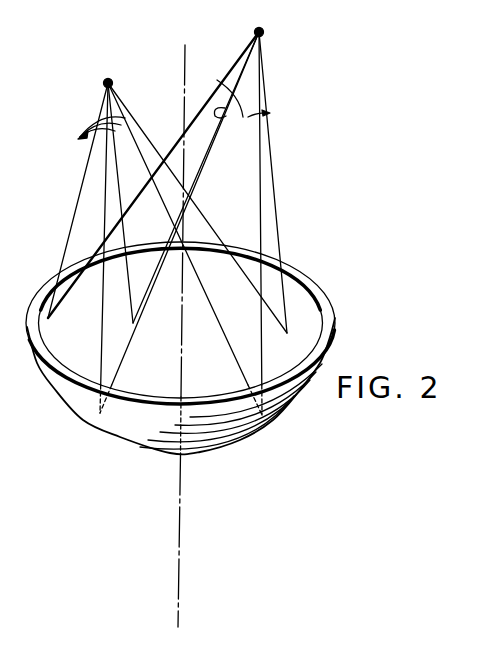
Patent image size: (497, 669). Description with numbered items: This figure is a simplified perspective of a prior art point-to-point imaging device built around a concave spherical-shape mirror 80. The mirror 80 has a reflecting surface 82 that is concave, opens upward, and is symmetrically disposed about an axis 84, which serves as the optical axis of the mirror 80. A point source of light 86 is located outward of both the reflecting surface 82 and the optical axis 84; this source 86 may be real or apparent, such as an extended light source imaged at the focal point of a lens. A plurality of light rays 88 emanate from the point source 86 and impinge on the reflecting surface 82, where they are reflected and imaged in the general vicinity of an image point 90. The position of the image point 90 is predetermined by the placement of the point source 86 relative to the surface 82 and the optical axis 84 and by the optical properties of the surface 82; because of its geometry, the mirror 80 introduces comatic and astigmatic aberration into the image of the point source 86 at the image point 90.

The concave spherical-shape mirror 80 is at (281, 419).
The reflecting surface 82 is at (322, 330).
The axis 84 is at (184, 63).
The point source of light 86 is at (271, 22).
The light rays 88 is at (162, 115).
The image point 90 is at (113, 62).